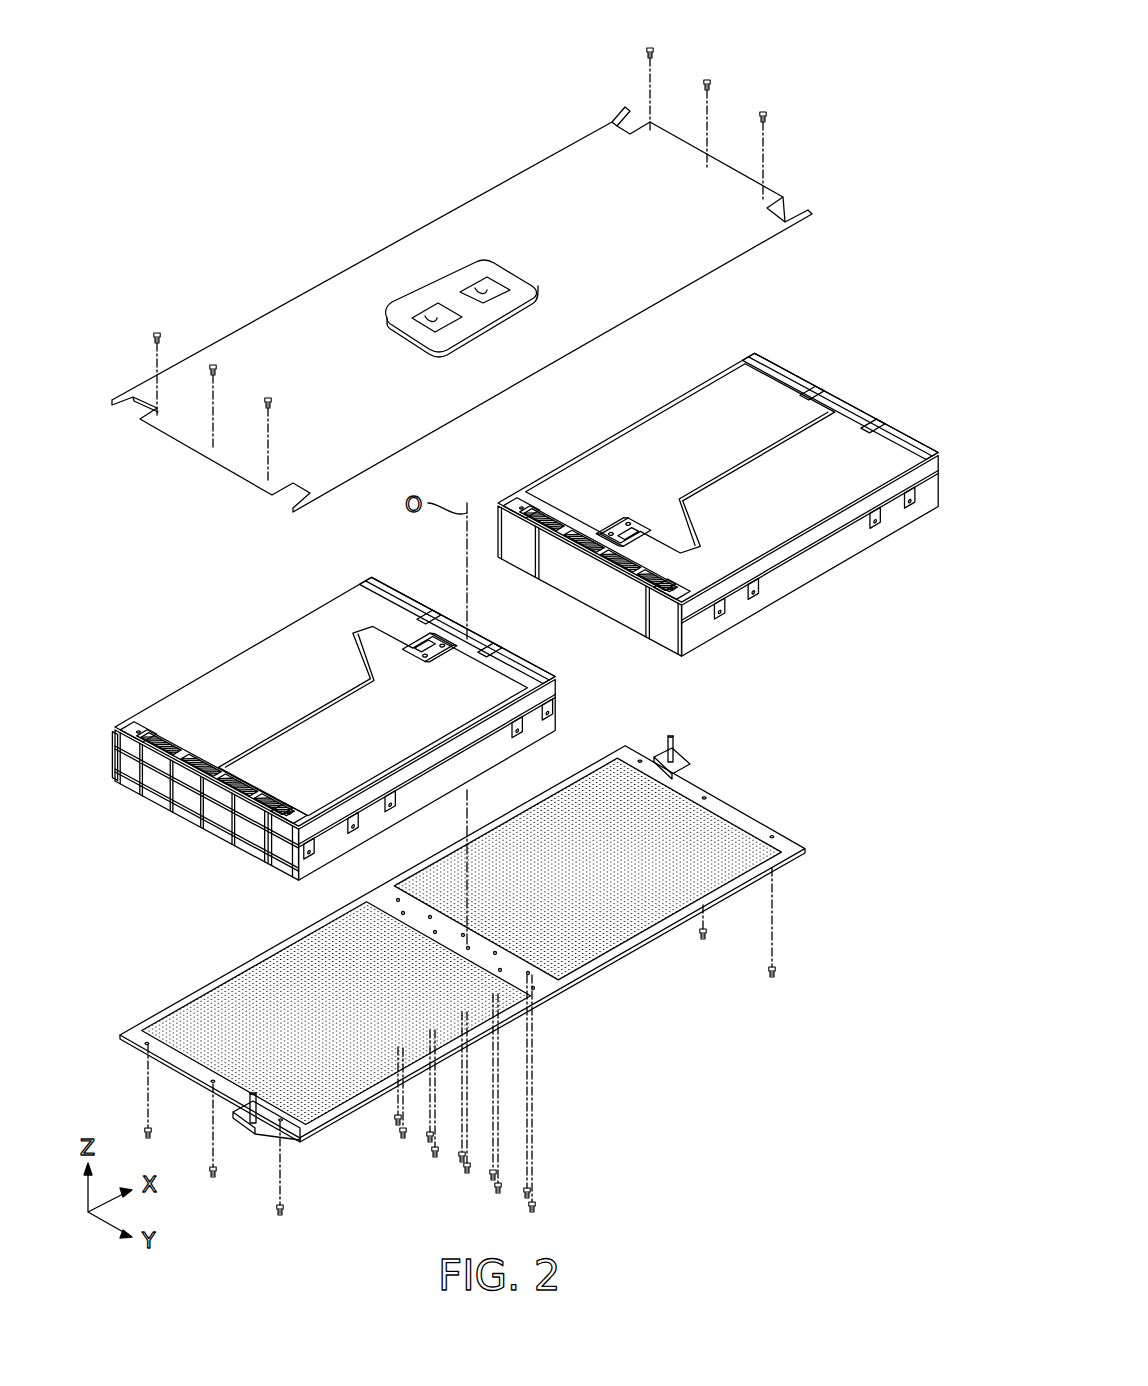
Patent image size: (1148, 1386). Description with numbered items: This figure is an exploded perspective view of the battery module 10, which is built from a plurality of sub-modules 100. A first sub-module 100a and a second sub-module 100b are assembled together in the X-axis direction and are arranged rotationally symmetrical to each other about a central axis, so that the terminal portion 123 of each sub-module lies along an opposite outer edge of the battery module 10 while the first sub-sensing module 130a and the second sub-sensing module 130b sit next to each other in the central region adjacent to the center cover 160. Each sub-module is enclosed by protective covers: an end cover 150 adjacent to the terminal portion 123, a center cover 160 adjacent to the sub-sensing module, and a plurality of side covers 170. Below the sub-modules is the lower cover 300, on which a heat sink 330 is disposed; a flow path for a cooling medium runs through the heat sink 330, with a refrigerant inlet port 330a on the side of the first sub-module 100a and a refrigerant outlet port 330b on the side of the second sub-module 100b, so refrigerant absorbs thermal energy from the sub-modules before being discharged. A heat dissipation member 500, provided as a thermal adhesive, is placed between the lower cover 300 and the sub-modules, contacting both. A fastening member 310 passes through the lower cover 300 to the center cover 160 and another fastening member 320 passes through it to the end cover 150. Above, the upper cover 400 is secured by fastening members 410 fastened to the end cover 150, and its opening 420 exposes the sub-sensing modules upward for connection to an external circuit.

The battery module 10 is at (246, 123).
The sub-module 100 is at (497, 729).
The first sub-module 100a is at (306, 729).
The second sub-module 100b is at (718, 489).
The terminal portion 123 is at (122, 788).
The first sub-sensing module 130a is at (430, 633).
The second sub-sensing module 130b is at (620, 518).
The end cover 150 is at (215, 813).
The center cover 160 is at (597, 588).
The side cover 170 is at (535, 726).
The lower cover 300 is at (496, 965).
The fastening member 310 is at (536, 1207).
The fastening member 320 is at (776, 978).
The heat sink 330 is at (462, 941).
The refrigerant inlet port 330a is at (262, 1105).
The refrigerant outlet port 330b is at (676, 742).
The upper cover 400 is at (548, 158).
The fastening member 410 is at (763, 110).
The opening 420 is at (486, 287).
The heat dissipation member 500 is at (568, 962).